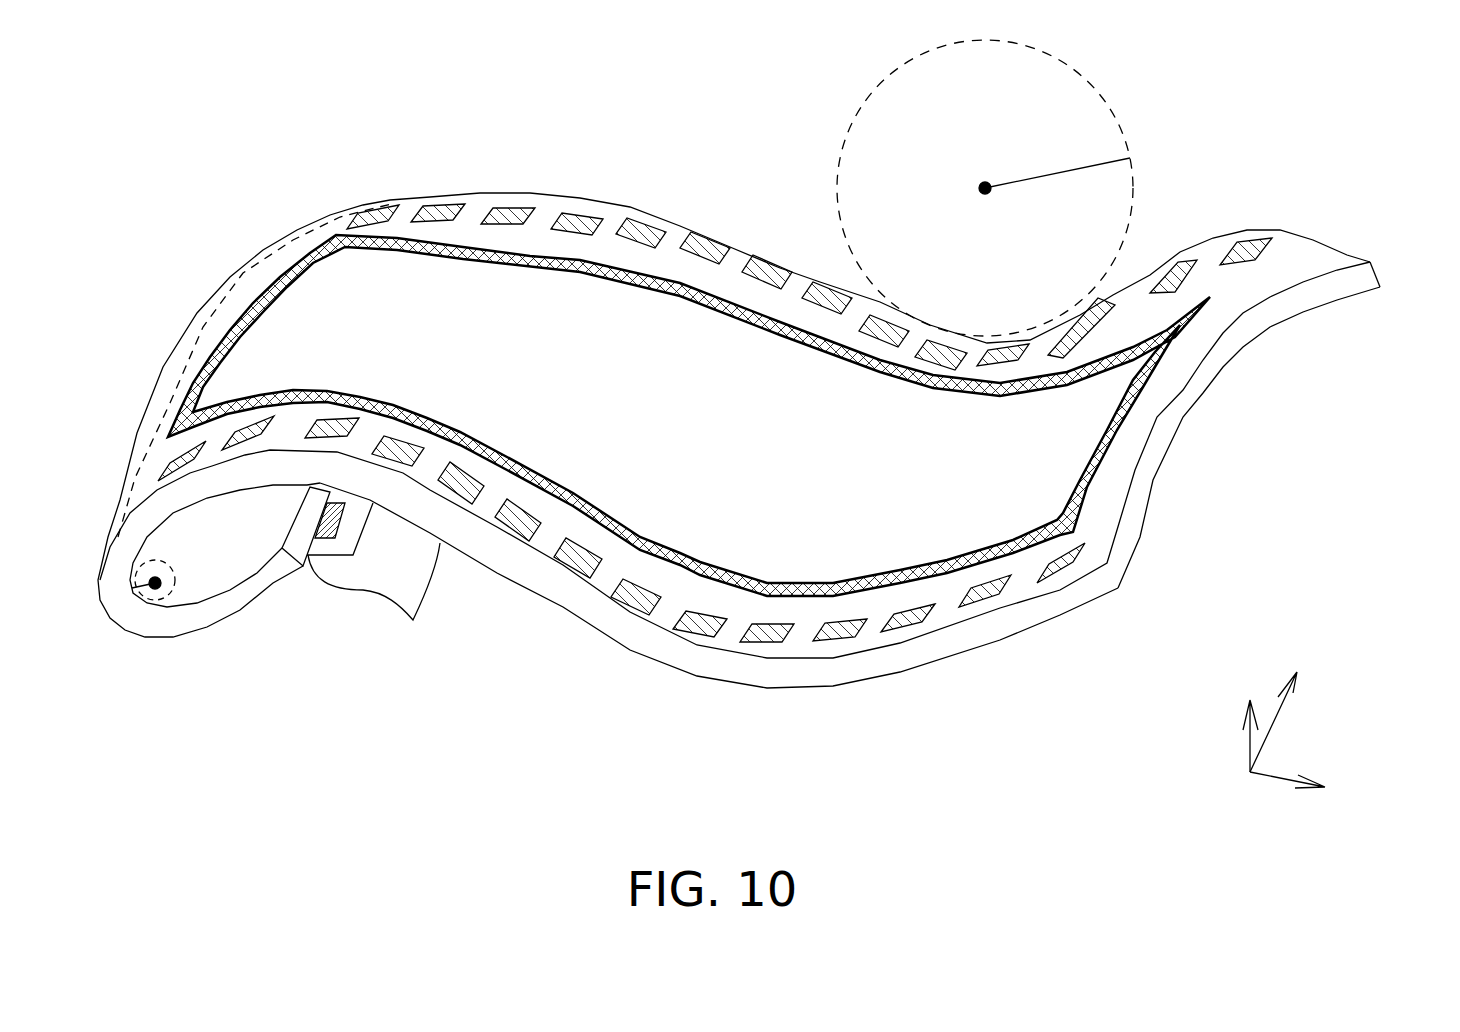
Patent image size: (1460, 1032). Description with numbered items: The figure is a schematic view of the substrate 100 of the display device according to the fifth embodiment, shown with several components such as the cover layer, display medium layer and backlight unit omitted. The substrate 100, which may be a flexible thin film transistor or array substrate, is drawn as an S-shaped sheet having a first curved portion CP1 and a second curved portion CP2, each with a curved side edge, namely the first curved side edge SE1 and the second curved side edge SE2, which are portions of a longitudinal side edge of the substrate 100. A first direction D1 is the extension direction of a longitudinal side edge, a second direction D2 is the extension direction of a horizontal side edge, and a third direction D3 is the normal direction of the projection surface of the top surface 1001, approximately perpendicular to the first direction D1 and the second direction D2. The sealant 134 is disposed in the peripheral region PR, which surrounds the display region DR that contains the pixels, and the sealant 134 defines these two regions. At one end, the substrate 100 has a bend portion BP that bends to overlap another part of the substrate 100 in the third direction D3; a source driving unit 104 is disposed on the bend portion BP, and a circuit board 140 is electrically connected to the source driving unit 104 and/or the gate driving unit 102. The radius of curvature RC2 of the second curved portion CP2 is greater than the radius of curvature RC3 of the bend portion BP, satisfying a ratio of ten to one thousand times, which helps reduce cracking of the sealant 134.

The substrate 100 is at (1293, 140).
The gate driving unit 102 is at (1092, 550).
The source driving unit 104 is at (332, 538).
The sealant 134 is at (1115, 430).
The circuit board 140 is at (440, 607).
The top surface 1001 is at (543, 213).
The first curved portion CP1 is at (482, 207).
The second curved portion CP2 is at (1033, 583).
The peripheral region PR is at (620, 225).
The display region DR is at (687, 357).
The radius of curvature RC2 is at (1056, 176).
The radius of curvature RC3 is at (143, 590).
The bend portion BP is at (140, 460).
The first curved side edge SE1 is at (573, 593).
The second curved side edge SE2 is at (878, 650).
The first direction D1 is at (1309, 775).
The second direction D2 is at (1292, 722).
The third direction D3 is at (1250, 719).